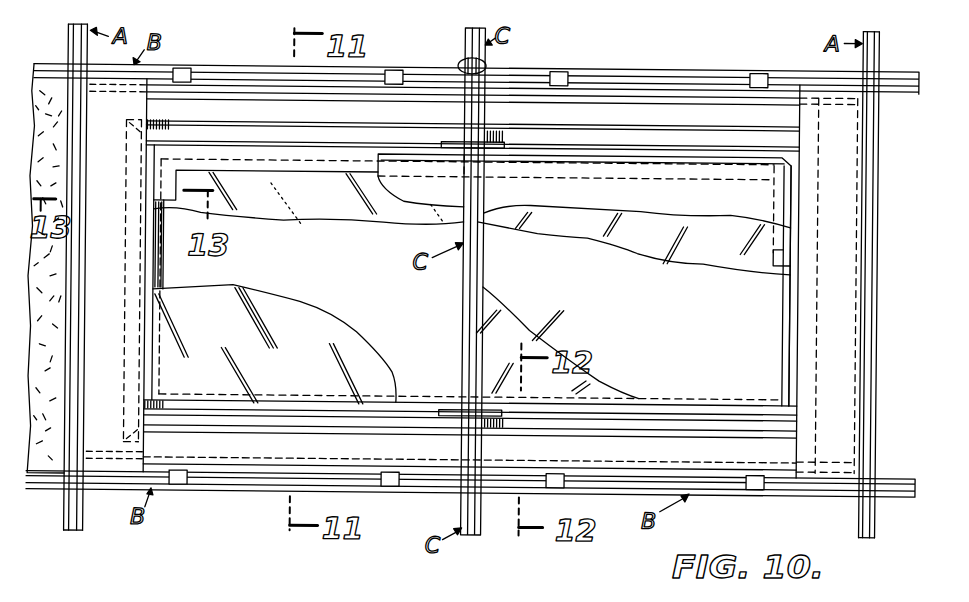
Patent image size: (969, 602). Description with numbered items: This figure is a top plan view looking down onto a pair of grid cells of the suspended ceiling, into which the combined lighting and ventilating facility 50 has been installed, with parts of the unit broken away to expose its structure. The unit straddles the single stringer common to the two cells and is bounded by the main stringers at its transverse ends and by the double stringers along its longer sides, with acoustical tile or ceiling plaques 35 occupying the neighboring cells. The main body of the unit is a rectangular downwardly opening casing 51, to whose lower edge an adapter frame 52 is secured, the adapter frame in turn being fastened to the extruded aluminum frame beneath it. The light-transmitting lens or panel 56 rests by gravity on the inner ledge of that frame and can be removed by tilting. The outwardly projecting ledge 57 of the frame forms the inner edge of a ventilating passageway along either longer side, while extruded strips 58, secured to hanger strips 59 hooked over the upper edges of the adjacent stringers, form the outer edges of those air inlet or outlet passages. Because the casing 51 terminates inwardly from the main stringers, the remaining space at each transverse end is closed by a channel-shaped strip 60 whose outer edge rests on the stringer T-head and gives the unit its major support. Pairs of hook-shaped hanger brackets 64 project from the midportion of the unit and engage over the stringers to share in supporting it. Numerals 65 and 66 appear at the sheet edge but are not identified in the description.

The acoustical tile or ceiling plaque 35 is at (56, 479).
The combined lighting and ventilating facility 50 is at (505, 283).
The casing 51 is at (767, 157).
The adapter frame 52 is at (702, 148).
The light-transmitting lens or panel 56 is at (275, 305).
The outwardly projecting ledge 57 is at (698, 134).
The extruded strip 58 is at (236, 96).
The hanger strip 59 is at (561, 71).
The channel-shaped strip 60 is at (146, 114).
The hook-shaped hanger bracket 64 is at (484, 70).
The lower member 65 is at (59, 594).
The lower member 66 is at (204, 594).